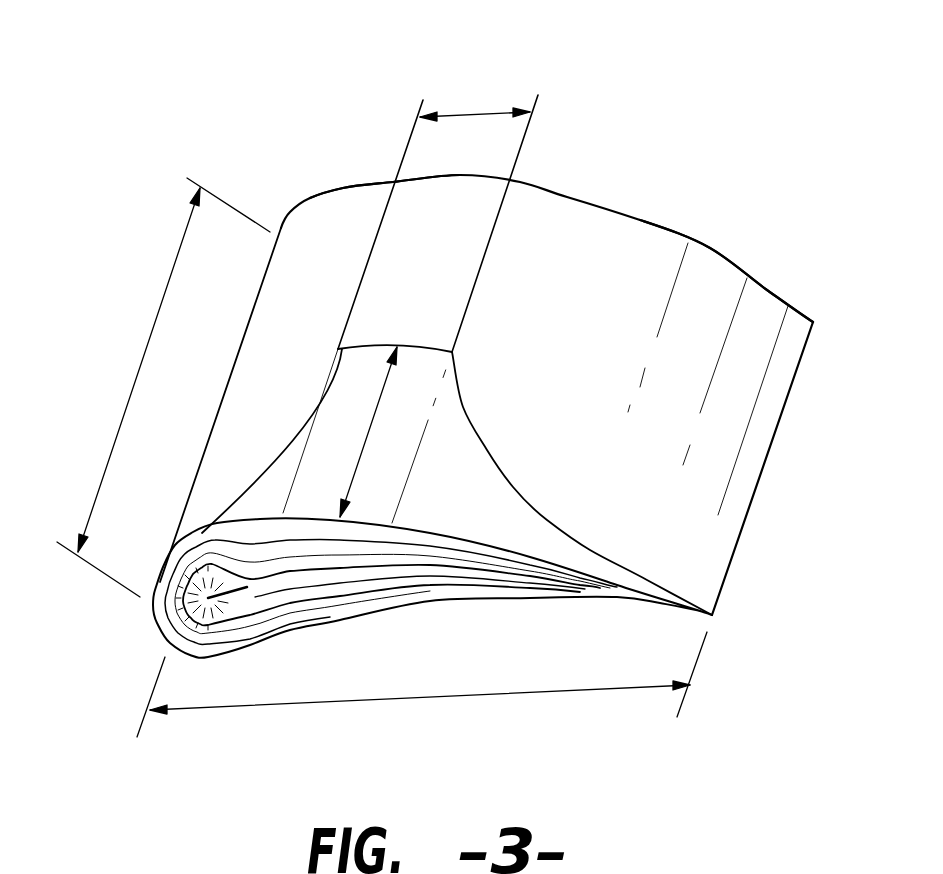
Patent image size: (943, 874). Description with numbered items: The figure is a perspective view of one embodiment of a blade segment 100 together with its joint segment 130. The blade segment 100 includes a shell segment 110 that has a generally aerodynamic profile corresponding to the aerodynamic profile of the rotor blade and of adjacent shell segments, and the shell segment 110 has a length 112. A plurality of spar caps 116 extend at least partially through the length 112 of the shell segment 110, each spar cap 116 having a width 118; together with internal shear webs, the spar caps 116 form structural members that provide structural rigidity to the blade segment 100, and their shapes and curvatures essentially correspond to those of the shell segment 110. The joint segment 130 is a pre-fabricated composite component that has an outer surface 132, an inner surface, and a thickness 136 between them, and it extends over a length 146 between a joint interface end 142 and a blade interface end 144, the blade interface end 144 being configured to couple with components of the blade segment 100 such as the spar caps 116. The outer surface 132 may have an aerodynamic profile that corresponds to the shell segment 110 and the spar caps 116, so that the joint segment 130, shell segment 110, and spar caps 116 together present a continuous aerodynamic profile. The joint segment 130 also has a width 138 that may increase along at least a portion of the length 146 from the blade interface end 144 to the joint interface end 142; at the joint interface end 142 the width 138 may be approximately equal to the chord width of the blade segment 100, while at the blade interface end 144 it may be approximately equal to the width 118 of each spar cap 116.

The blade segment 100 is at (273, 100).
The shell segment 110 is at (705, 270).
The length 112 is at (162, 332).
The spar cap 116 is at (437, 193).
The width 118 is at (472, 112).
The joint segment 130 is at (357, 387).
The outer surface 132 is at (323, 452).
The thickness 136 is at (236, 530).
The width 138 is at (402, 700).
The joint interface end 142 is at (185, 618).
The blade interface end 144 is at (453, 352).
The length 146 is at (250, 588).